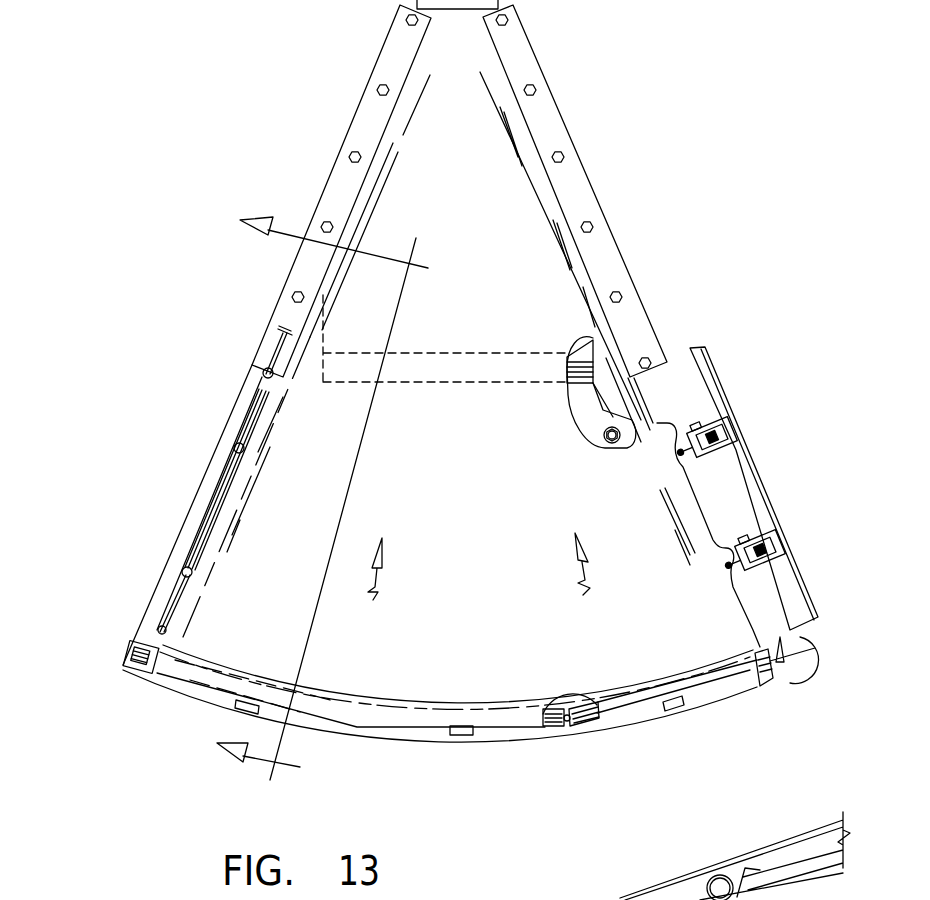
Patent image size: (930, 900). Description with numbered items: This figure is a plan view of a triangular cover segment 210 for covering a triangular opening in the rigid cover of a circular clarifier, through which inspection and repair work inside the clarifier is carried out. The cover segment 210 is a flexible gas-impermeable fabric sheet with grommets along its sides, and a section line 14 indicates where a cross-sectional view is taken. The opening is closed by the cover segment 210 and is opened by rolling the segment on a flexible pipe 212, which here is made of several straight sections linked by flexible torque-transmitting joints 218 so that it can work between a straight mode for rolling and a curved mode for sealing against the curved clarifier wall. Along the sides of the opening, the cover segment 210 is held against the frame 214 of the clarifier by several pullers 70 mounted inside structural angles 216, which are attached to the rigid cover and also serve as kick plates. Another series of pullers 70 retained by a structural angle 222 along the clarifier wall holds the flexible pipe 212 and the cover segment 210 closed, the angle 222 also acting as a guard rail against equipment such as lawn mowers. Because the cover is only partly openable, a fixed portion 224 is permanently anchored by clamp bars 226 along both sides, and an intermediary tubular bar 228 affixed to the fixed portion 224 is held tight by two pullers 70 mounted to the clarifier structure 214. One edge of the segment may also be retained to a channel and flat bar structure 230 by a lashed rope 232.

The section line 14- 14 is at (306, 482).
The puller 70 is at (598, 420).
The triangular cover segment 210 is at (502, 558).
The flexible pipe 212 is at (578, 726).
The frame of the clarifier 214 is at (642, 368).
The structural angle 216 is at (720, 368).
The flexible torque-transmitting joint 218 is at (569, 727).
The structural angle 222 is at (452, 743).
The fixed portion 224 is at (495, 323).
The clamp bar 226 is at (590, 184).
The intermediary tubular bar 228 is at (598, 372).
The channel and flat bar structure 230 is at (212, 457).
The lashed rope 232 is at (216, 493).